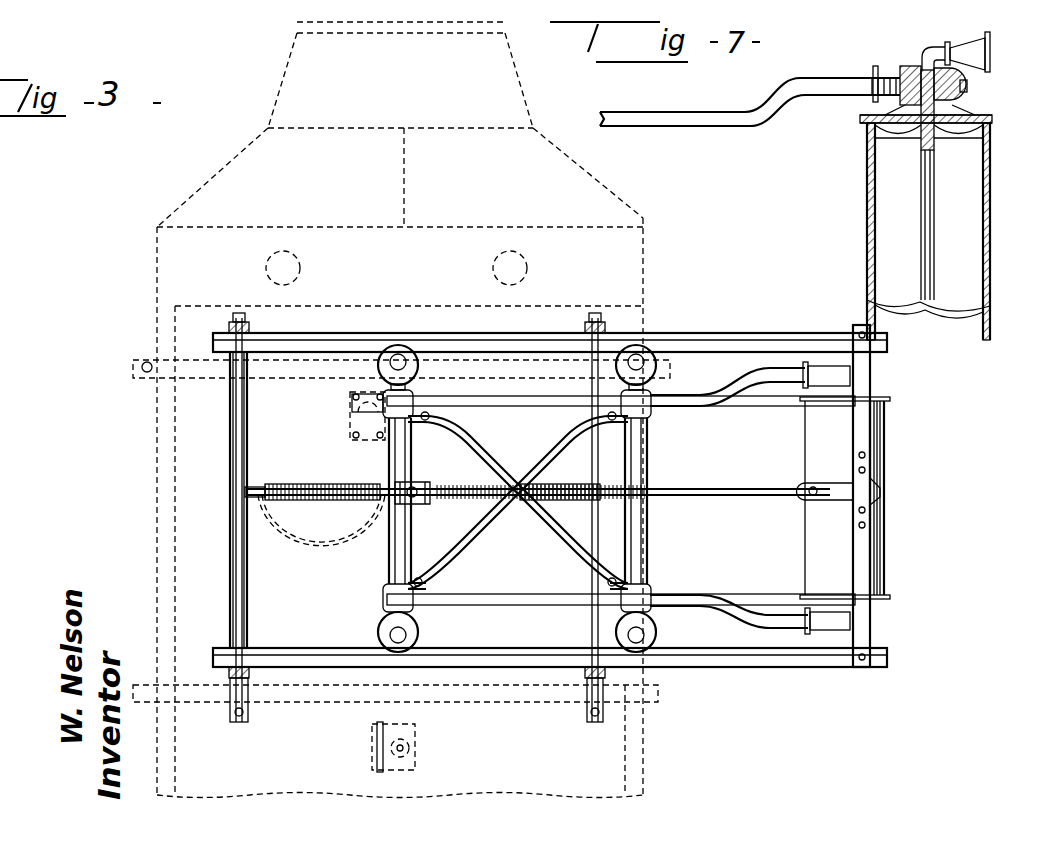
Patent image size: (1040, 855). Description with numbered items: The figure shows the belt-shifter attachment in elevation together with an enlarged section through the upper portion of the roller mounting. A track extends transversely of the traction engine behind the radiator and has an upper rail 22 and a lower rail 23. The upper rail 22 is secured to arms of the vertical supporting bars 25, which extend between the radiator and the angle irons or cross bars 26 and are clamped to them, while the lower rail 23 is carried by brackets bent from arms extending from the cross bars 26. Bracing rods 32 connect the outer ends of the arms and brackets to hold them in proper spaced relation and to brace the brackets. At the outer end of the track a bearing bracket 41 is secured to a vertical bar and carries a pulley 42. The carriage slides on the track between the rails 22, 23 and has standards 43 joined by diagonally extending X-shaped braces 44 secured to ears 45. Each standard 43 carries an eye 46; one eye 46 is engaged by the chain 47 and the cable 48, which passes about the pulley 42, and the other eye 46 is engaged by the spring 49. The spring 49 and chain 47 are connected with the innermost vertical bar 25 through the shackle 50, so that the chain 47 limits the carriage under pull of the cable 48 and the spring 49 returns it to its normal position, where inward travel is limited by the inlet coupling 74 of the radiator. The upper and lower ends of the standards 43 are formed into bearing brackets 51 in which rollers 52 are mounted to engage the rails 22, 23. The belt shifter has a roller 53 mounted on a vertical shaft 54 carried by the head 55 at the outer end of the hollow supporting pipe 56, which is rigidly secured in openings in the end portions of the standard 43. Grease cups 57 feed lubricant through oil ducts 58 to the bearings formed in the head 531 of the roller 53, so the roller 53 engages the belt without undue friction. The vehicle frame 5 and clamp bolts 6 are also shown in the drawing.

In FIG. 3, the vehicle chassis frame 5 is at (402, 306).
In FIG. 3, the clamp bolts 6 is at (402, 535).
In FIG. 3, the upper rail 22 is at (340, 335).
In FIG. 3, the lower rail 23 is at (313, 668).
In FIG. 3, the vertical supporting bars 25 is at (237, 414).
In FIG. 3, the cross bars 26 is at (355, 703).
In FIG. 3, the bracing rods 32 is at (240, 438).
In FIG. 3, the bearing bracket 41 is at (870, 474).
In FIG. 3, the pulley 42 is at (807, 497).
In FIG. 3, the standards 43 is at (388, 462).
In FIG. 3, the X-shaped braces 44 is at (478, 454).
In FIG. 3, the ears 45 is at (465, 417).
In FIG. 3, the eye 46 is at (378, 506).
In FIG. 3, the chain 47 is at (290, 527).
In FIG. 3, the cable 48 is at (760, 494).
In FIG. 3, the spring 49 is at (288, 484).
In FIG. 3, the shackle 50 is at (250, 500).
In FIG. 3, the bearing brackets 51 is at (349, 398).
In FIG. 3, the rollers 52 is at (403, 350).
In FIG. 3, the roller 53 is at (886, 433).
In FIG. 7, the roller 53 is at (990, 262).
In FIG. 3, the head of roller 531 is at (892, 398).
In FIG. 7, the head of roller 531 is at (990, 123).
In FIG. 7, the vertical shaft 54 is at (925, 210).
In FIG. 3, the head 55 is at (842, 370).
In FIG. 7, the head 55 is at (965, 85).
In FIG. 3, the hollow supporting bar or pipe 56 is at (718, 394).
In FIG. 7, the hollow supporting bar or pipe 56 is at (795, 80).
In FIG. 7, the grease cups 57 is at (990, 45).
In FIG. 7, the oil ducts 58 is at (970, 118).
In FIG. 3, the inlet coupling 74 is at (332, 483).